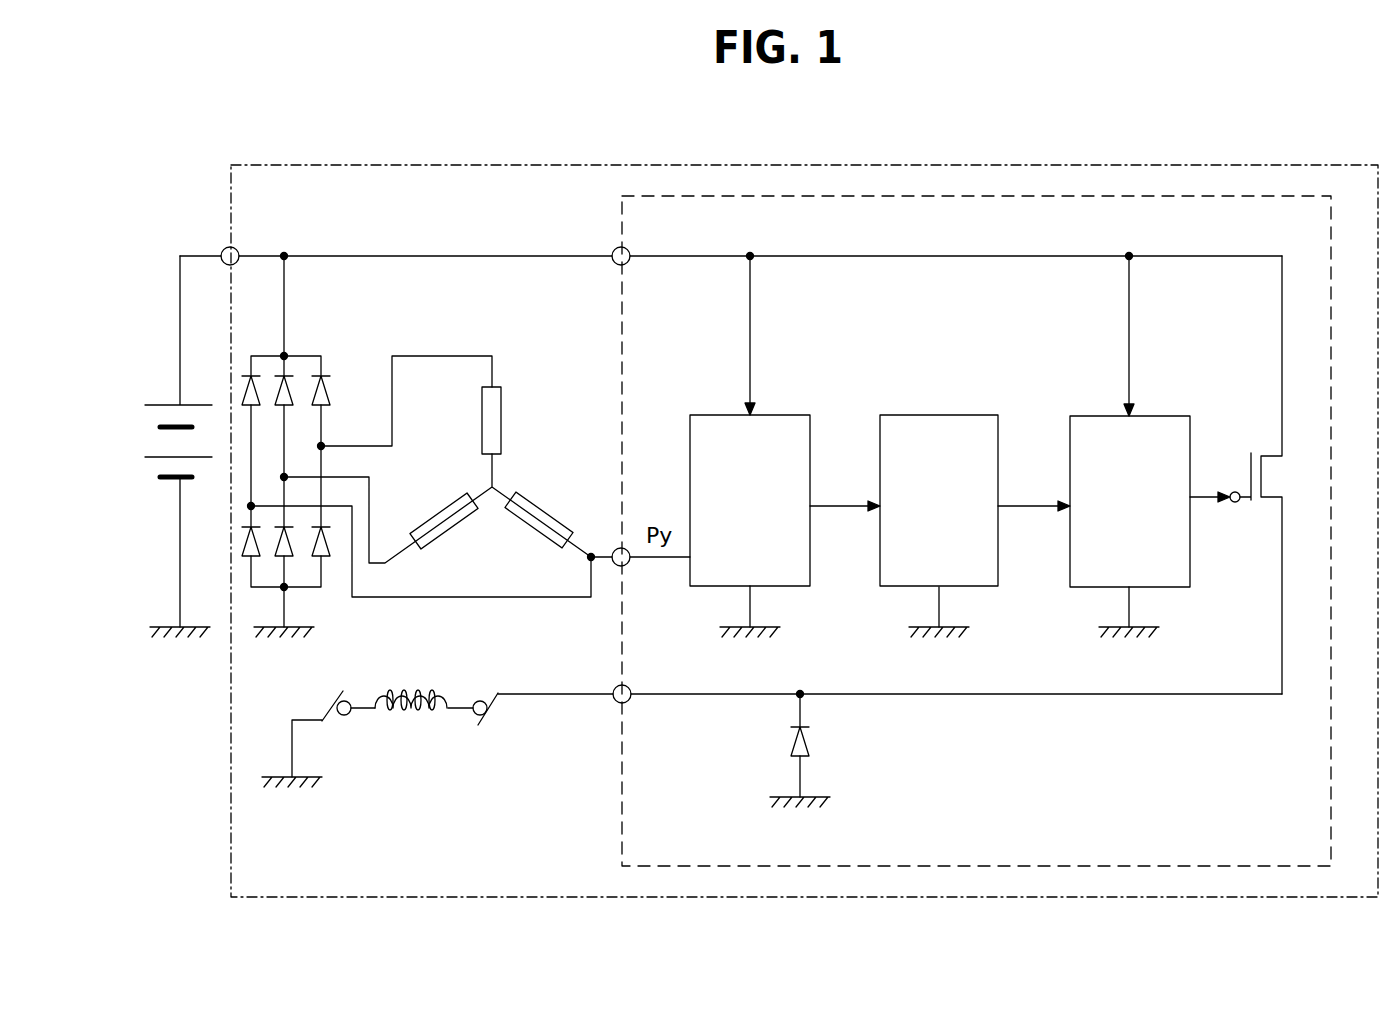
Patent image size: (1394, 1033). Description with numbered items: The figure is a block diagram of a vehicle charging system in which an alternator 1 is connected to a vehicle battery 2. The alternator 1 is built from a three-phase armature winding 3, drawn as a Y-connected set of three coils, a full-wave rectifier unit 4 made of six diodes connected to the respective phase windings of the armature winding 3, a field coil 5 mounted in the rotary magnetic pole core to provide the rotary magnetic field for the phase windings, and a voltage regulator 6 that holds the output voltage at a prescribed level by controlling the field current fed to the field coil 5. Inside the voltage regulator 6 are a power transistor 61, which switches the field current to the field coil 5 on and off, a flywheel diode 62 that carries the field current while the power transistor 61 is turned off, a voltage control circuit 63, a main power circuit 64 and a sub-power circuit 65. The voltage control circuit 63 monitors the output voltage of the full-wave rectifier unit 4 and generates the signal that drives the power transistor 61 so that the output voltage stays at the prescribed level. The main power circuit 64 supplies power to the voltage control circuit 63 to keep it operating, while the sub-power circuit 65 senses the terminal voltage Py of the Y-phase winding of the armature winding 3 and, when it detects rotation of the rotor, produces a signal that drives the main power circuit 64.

The alternator 1 is at (468, 165).
The vehicle battery 2 is at (165, 405).
The three-phase armature winding 3 is at (482, 355).
The full-wave rectifier unit 4 is at (307, 356).
The field coil 5 is at (415, 718).
The voltage regulator 6 is at (653, 196).
The power transistor 61 is at (1245, 466).
The flywheel diode 62 is at (808, 740).
The voltage control circuit 63 is at (1160, 416).
The main power circuit 64 is at (968, 415).
The sub-power circuit 65 is at (788, 414).